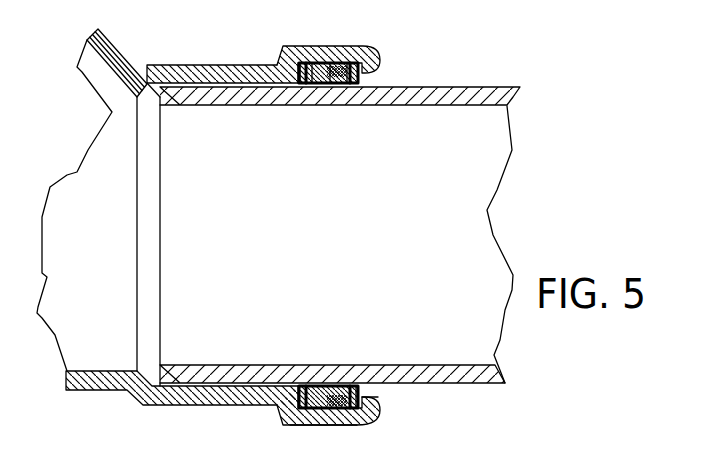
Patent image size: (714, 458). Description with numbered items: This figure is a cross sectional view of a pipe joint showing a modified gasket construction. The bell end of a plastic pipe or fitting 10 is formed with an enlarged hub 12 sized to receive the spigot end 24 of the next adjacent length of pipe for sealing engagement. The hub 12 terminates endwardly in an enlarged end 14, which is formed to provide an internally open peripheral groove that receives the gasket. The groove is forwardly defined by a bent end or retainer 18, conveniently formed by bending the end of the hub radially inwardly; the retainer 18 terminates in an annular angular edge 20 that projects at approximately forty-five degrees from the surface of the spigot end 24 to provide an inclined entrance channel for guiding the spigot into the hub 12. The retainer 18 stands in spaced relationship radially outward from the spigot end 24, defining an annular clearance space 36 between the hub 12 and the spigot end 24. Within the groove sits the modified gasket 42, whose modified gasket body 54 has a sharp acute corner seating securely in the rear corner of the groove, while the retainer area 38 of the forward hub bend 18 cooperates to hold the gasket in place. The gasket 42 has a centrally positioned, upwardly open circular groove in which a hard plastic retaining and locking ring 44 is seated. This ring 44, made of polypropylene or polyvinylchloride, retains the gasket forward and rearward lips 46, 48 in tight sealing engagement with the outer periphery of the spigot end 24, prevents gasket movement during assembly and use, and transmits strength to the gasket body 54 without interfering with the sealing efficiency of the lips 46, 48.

The plastic pipe or fitting 10 is at (120, 53).
The enlarged hub 12 is at (220, 66).
The enlarged end 14 is at (337, 44).
The bent end or retainer 18 is at (380, 57).
The annular angular edge 20 is at (378, 72).
The spigot end 24 is at (448, 102).
The annular clearance space 36 is at (378, 392).
The retainer area 38 is at (362, 396).
The modified gasket 42 is at (323, 425).
The hard plastic retaining and locking ring 44 is at (331, 82).
The gasket forward or leading lip 46 is at (347, 82).
The gasket trailing or sealing lip 48 is at (313, 82).
The modified gasket body 54 is at (294, 82).